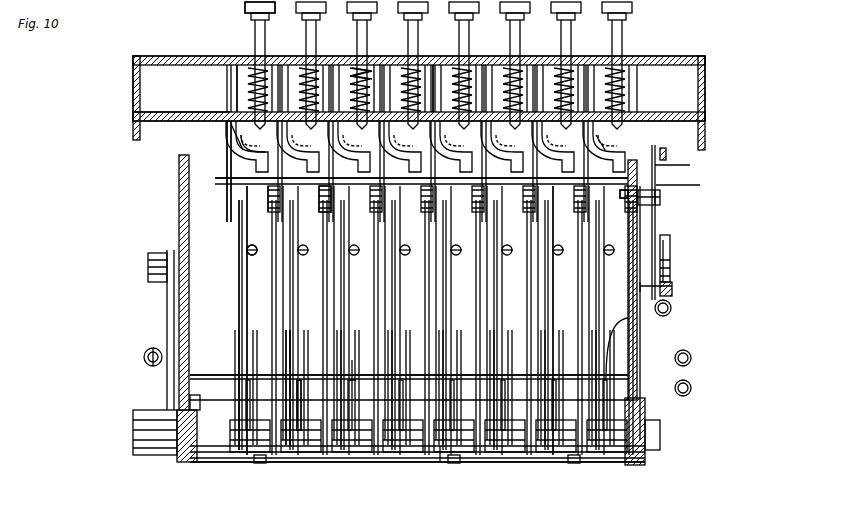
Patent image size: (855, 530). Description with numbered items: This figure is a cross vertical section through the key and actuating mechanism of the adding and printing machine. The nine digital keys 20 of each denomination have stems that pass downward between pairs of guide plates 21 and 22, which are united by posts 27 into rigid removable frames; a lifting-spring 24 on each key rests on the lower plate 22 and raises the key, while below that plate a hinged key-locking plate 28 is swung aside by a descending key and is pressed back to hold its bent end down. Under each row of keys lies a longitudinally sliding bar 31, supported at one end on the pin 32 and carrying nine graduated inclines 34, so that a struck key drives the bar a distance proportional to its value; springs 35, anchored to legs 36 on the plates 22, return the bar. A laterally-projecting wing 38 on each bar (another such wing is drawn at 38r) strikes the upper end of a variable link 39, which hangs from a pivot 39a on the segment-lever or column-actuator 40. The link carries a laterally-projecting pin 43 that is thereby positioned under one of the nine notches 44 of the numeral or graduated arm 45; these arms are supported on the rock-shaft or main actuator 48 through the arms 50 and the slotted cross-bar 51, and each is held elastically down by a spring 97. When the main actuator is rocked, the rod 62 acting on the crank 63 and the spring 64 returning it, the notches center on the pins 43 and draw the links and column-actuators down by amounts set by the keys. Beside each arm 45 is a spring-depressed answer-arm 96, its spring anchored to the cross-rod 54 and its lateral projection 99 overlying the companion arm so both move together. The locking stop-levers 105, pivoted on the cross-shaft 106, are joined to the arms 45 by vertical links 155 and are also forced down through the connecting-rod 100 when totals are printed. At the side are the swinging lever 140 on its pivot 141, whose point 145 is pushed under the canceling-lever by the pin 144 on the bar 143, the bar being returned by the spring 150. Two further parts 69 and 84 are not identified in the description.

The digital keys 20 is at (376, 11).
The guide plate 21 is at (546, 77).
The guide plate 22 is at (180, 118).
The lifting-spring 24 is at (368, 72).
The posts 27 is at (255, 78).
The key-locking plate 28 is at (494, 115).
The bar 31 is at (240, 110).
The pin 32 is at (700, 185).
The inclines 34 is at (610, 140).
The springs 35 is at (616, 150).
The legs 36 is at (227, 196).
The wing 38 is at (328, 205).
The ratchet block 38r is at (690, 165).
The link 39 is at (240, 140).
The pivotal attachment 39a is at (640, 205).
The segment-lever 40 is at (272, 212).
The pin 43 is at (440, 463).
The notches 44 is at (301, 397).
The numeral arm 45 is at (240, 334).
The main actuator 48 is at (660, 435).
The arms 50 is at (260, 463).
The slotted cross-bar 51 is at (314, 374).
The cross-rod 54 is at (212, 410).
The rod 62 is at (148, 272).
The crank 63 is at (167, 312).
The spring 64 is at (144, 360).
The pivot 69 is at (256, 254).
The roller 84 is at (691, 386).
The answer-arm 96 is at (366, 380).
The spring 97 is at (390, 463).
The lateral projections 99 is at (637, 320).
The connecting-rod 100 is at (666, 154).
The locking stop-levers 105 is at (245, 215).
The cross-shaft 106 is at (556, 215).
The swinging lever 140 is at (656, 177).
The pivot 141 is at (660, 197).
The bar 143 is at (671, 259).
The pin 144 is at (672, 286).
The point 145 is at (676, 270).
The spring 150 is at (672, 309).
The vertical links 155 is at (238, 280).